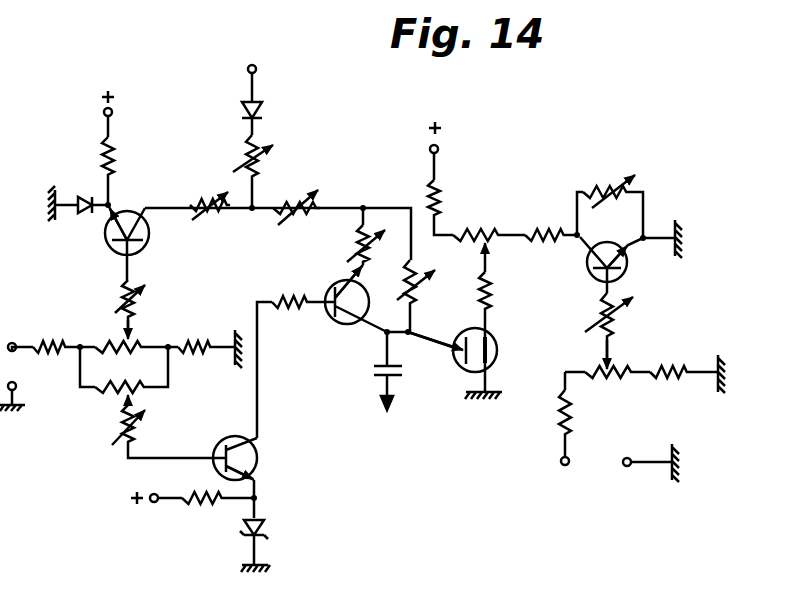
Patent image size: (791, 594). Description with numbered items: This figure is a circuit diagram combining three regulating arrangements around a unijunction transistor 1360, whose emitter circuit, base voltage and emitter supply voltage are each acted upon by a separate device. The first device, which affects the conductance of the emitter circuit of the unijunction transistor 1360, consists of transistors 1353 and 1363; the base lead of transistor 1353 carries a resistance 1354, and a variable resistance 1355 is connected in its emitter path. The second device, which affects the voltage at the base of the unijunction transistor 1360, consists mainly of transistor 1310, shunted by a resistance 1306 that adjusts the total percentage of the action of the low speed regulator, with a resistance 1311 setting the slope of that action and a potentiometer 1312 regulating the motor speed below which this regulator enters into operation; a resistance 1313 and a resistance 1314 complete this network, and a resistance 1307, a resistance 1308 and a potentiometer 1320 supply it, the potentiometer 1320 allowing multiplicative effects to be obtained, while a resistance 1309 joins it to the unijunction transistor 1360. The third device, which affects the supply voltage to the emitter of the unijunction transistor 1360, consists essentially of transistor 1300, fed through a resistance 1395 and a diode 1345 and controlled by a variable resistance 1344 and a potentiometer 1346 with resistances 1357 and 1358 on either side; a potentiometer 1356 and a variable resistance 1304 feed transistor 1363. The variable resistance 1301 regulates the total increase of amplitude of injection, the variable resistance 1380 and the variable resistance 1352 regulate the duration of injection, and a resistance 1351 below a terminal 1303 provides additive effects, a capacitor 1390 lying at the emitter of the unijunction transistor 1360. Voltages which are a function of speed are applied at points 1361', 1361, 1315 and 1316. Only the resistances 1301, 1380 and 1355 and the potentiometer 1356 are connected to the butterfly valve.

The transistor 1300 is at (149, 240).
The resistance 1301 is at (205, 193).
The terminal 1303 is at (278, 63).
The resistance 1304 is at (149, 425).
The resistance 1306 is at (609, 184).
The resistor 1307 is at (440, 192).
The resistor 1308 is at (550, 224).
The resistor 1309 is at (492, 300).
The transistor 1310 is at (627, 268).
The resistance 1311 is at (631, 316).
The potentiometer 1312 is at (610, 387).
The resistor 1313 is at (675, 387).
The resistor 1314 is at (560, 430).
The point 1315 is at (563, 473).
The point 1316 is at (638, 474).
The potentiometer 1320 is at (480, 224).
The resistance 1344 is at (153, 300).
The diode 1345 is at (82, 196).
The potentiometer 1346 is at (123, 360).
The resistance 1351 is at (278, 141).
The resistance 1352 is at (432, 306).
The transistor 1353 is at (324, 293).
The resistor 1354 is at (293, 317).
The resistance 1355 is at (347, 245).
The potentiometer 1356 is at (109, 401).
The resistor 1357 is at (68, 342).
The resistor 1358 is at (200, 338).
The unijunction transistor 1360 is at (493, 360).
The point 1361 is at (39, 384).
The point 1361' is at (30, 330).
The transistor 1363 is at (258, 458).
The resistance 1380 is at (304, 200).
The capacitor 1390 is at (366, 386).
The resistor 1395 is at (112, 158).